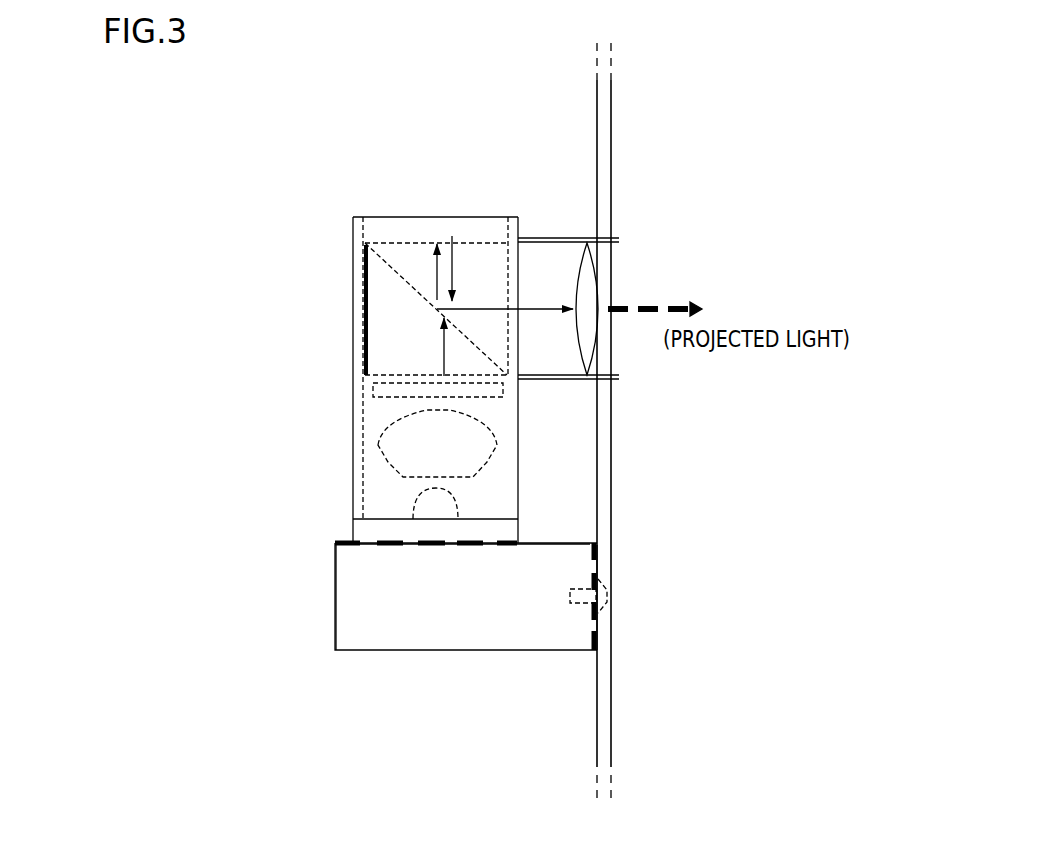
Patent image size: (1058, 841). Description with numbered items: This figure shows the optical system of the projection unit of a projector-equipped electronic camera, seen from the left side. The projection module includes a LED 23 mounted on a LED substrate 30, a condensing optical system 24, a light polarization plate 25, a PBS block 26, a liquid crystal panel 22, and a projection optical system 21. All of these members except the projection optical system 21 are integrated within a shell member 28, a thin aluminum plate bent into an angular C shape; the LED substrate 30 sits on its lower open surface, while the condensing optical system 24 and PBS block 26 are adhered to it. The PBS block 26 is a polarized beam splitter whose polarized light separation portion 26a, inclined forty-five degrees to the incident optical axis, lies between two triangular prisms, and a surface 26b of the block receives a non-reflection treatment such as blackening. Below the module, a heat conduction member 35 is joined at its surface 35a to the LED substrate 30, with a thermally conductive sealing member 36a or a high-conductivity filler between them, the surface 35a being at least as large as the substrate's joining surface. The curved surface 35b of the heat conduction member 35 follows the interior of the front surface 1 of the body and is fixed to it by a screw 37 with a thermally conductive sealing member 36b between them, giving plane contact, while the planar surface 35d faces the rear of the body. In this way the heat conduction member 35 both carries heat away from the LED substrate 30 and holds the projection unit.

The front surface 1 is at (612, 684).
The projection optical system 21 is at (593, 272).
The liquid crystal panel 22 is at (415, 225).
The LED 23 is at (435, 507).
The condensing optical system 24 is at (412, 447).
The light polarization plate 25 is at (477, 390).
The PBS block 26 is at (495, 270).
The polarized light separation portion 26a is at (398, 272).
The surface of PBS block 26b is at (364, 329).
The shell member 28 is at (352, 236).
The LED substrate 30 is at (490, 533).
The heat conduction member 35 is at (396, 602).
The surface of heat conduction member 35a is at (416, 569).
The surface of heat conduction member 35b is at (542, 620).
The surface of heat conduction member 35d is at (333, 616).
The thermally conductive sealing member 36a is at (330, 530).
The thermally conductive sealing member 36b is at (595, 645).
The screw 37 is at (600, 596).